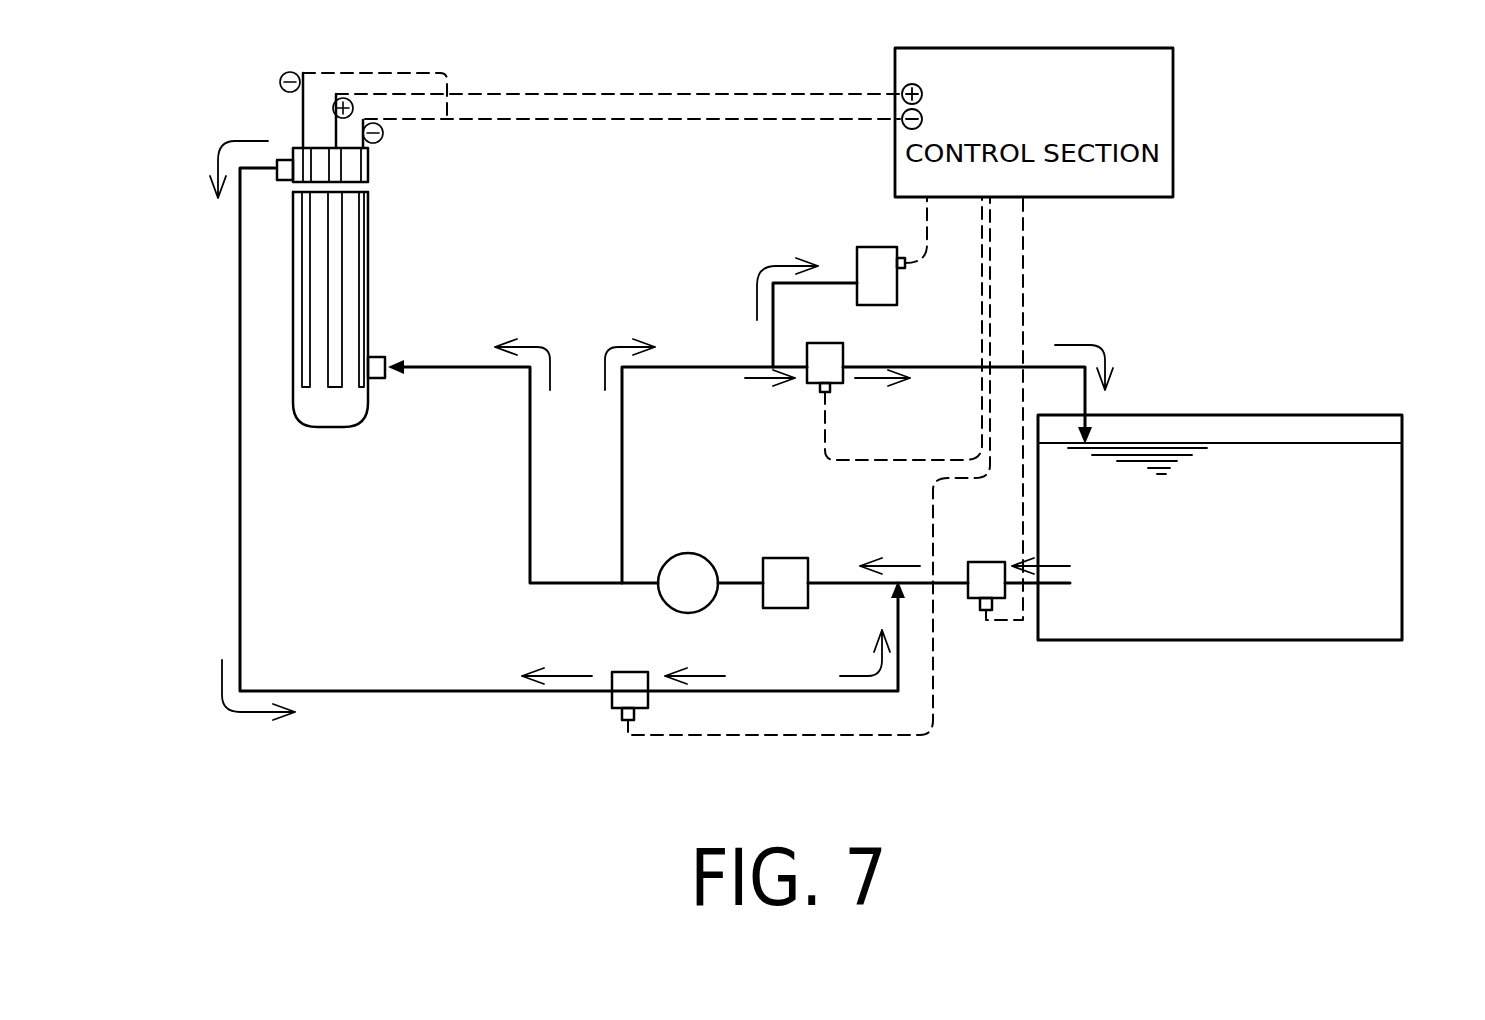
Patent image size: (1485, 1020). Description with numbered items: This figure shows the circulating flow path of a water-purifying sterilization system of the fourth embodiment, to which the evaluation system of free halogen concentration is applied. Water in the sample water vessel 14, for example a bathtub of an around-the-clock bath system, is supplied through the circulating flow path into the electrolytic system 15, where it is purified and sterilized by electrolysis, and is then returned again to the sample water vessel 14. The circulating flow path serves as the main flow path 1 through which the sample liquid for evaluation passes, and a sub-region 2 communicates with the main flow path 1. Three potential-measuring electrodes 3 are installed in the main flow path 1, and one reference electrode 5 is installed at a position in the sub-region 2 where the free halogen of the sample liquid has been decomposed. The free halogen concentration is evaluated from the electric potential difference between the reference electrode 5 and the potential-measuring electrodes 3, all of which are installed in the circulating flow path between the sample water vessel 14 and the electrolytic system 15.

The main flow path 1 is at (875, 378).
The sub-region 2 is at (772, 266).
The potential-measuring electrode 3 is at (838, 352).
The reference electrode 5 is at (905, 270).
The sample water vessel 14 is at (1377, 543).
The electrolytic system 15 is at (300, 312).